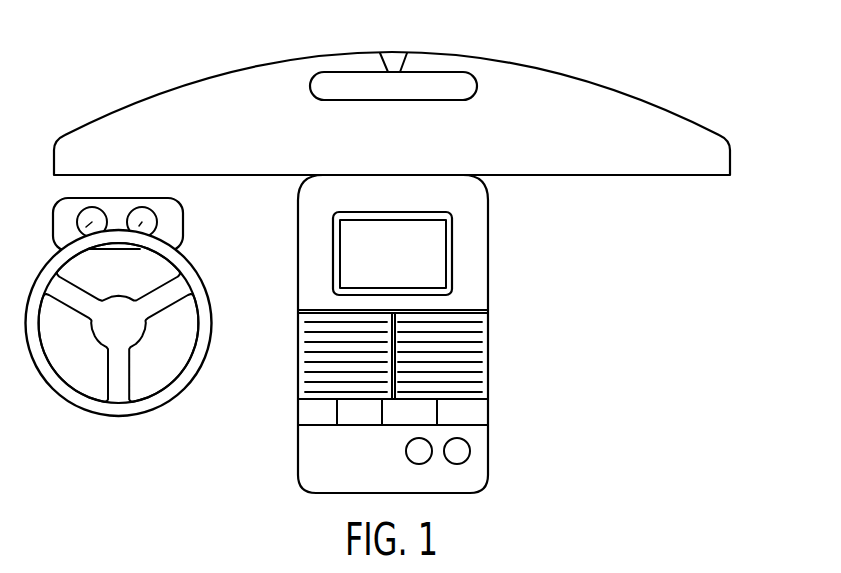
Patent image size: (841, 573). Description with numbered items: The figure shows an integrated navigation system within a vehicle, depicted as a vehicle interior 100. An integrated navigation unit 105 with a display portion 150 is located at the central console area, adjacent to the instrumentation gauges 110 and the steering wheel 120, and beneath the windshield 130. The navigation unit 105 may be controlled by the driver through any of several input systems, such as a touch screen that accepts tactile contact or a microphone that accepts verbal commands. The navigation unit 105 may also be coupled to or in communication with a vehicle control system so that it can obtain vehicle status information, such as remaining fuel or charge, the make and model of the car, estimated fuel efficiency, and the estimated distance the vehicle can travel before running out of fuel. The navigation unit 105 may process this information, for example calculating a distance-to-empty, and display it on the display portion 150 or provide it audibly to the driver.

The vehicle interior 100 is at (684, 57).
The integrated navigation unit 105 is at (455, 253).
The instrumentation gauges 110 is at (186, 221).
The steering wheel 120 is at (207, 295).
The windshield 130 is at (545, 85).
The display portion 150 is at (355, 253).